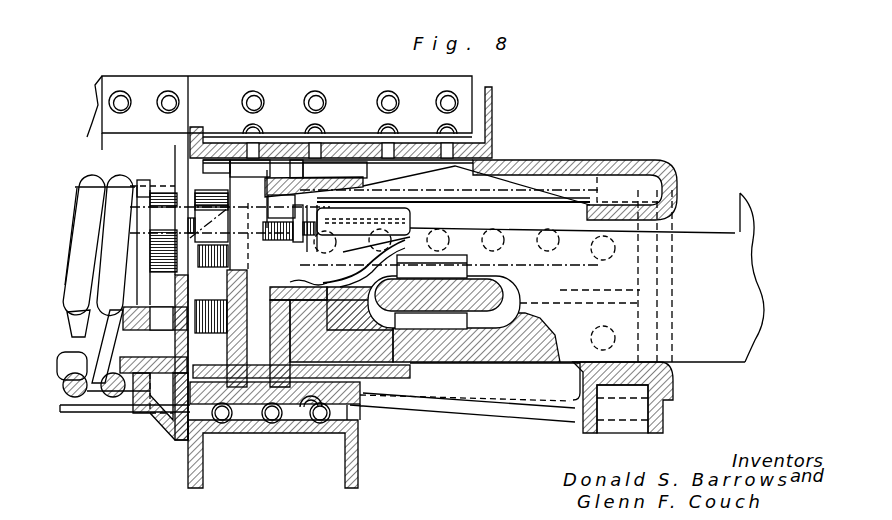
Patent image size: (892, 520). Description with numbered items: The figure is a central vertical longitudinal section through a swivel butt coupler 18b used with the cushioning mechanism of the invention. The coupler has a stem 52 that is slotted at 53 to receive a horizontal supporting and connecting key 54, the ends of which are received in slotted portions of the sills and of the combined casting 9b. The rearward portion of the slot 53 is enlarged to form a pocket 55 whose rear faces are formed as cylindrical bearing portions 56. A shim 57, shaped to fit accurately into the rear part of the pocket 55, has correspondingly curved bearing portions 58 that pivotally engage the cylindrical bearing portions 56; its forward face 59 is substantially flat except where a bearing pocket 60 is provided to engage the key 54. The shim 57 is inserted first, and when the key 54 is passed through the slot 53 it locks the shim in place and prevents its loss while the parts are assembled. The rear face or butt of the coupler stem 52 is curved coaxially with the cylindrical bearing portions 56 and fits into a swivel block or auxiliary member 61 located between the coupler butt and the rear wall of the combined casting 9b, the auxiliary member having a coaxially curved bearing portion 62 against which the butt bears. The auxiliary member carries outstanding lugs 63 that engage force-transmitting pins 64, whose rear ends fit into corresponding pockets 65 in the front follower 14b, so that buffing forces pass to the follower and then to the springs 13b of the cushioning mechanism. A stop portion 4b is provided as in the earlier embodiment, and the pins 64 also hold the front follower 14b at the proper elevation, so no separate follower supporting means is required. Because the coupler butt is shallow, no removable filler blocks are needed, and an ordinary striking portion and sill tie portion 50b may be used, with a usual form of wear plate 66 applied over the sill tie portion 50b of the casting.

The stop portion 4b is at (200, 462).
The combined casting 9b is at (527, 163).
The springs 13b is at (72, 290).
The front follower 14b is at (180, 146).
The swivel butt coupler 18b is at (747, 245).
The sill tie portion 50b is at (655, 431).
The coupler stem 52 is at (527, 363).
The slot 53 is at (517, 288).
The key 54 is at (480, 282).
The pocket 55 is at (395, 377).
The cylindrical bearing portions 56 is at (287, 316).
The shim 57 is at (342, 285).
The curved bearing portions 58 is at (293, 298).
The forward face 59 is at (410, 322).
The bearing pocket 60 is at (380, 300).
The swivel block 61 is at (290, 340).
The curved bearing portion 62 is at (287, 295).
The outstanding lugs 63 is at (316, 200).
The force-transmitting pins 64 is at (248, 265).
The pockets 65 is at (143, 187).
The wear plate 66 is at (675, 378).